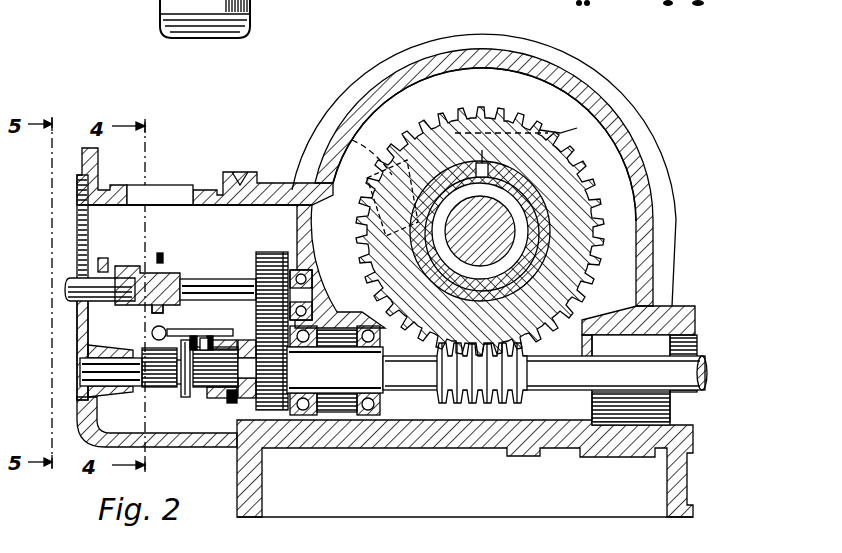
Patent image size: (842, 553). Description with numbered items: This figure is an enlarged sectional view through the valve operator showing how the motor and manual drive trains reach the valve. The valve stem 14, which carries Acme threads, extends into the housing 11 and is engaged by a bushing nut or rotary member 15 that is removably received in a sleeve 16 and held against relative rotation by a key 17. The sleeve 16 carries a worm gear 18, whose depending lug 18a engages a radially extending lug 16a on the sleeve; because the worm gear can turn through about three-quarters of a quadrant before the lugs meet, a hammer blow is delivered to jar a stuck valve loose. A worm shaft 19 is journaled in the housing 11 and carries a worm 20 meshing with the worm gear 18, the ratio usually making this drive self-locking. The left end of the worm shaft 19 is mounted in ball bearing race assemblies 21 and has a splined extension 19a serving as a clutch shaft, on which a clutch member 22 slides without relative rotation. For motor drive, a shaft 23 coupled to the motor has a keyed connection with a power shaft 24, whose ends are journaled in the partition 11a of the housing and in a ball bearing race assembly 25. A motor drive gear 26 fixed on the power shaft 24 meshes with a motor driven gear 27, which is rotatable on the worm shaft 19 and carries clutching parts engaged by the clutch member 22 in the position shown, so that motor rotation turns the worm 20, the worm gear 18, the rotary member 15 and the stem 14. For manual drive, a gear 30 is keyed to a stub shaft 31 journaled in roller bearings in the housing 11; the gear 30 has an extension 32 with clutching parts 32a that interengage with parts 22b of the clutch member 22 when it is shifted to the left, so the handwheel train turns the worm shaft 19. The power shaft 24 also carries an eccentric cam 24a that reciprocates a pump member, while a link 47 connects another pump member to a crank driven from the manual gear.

The housing 11 is at (678, 308).
The partition 11a is at (104, 258).
The stem 14 is at (505, 228).
The rotary member 15 is at (522, 200).
The sleeve 16 is at (568, 129).
The radially extending lug 16a is at (457, 127).
The key 17 is at (482, 168).
The worm gear 18 is at (572, 276).
The depending lug 18a is at (352, 138).
The worm shaft 19 is at (560, 390).
The splined extension 19a is at (205, 376).
The worm 20 is at (463, 403).
The ball bearing race assemblies 21 is at (322, 418).
The clutch member 22 is at (243, 400).
The clutching parts 22b is at (203, 342).
The shaft 23 is at (68, 283).
The power shaft 24 is at (215, 282).
The eccentric cam 24a is at (154, 310).
The ball bearing race assembly 25 is at (300, 270).
The motor drive gear 26 is at (256, 266).
The motor driven gear 27 is at (275, 396).
The gear 30 is at (158, 387).
The stub shaft 31 is at (87, 369).
The extension 32 is at (186, 398).
The clutching parts 32a is at (198, 340).
The link 47 is at (163, 256).